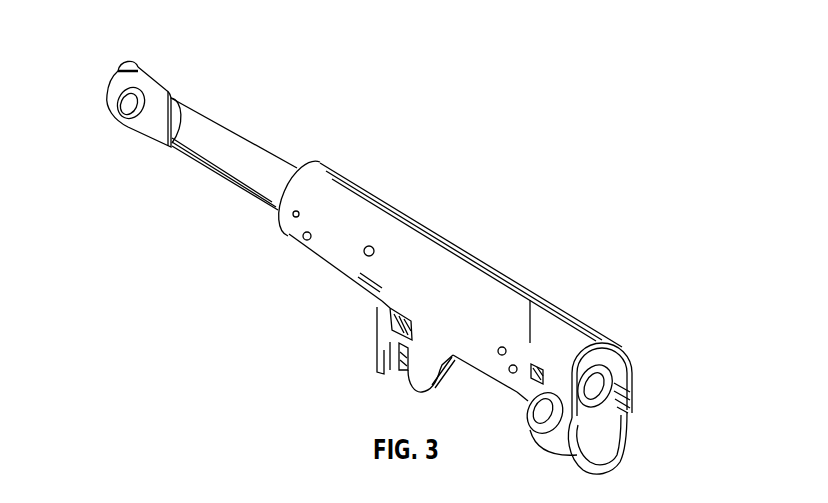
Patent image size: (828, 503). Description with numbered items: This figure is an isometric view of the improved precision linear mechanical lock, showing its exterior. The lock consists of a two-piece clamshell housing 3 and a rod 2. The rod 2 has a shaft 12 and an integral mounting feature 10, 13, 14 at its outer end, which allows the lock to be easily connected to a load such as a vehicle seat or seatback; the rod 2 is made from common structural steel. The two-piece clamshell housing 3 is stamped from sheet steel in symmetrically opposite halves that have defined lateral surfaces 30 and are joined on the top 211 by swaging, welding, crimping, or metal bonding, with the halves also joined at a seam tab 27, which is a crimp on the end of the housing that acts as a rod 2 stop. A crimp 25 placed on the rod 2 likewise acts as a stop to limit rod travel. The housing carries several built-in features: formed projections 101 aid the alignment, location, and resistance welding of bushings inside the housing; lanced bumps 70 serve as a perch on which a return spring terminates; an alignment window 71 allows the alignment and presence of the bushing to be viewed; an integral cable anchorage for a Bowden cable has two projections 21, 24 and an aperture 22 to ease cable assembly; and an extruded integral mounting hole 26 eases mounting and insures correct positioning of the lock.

The rod 2 is at (118, 73).
The integral mounting feature 10 is at (160, 82).
The shaft 12 is at (231, 136).
The integral mounting feature 13 is at (150, 130).
The integral mounting feature 14 is at (127, 108).
The top 211 is at (330, 167).
The lateral surface 30 is at (423, 298).
The lanced bump 70 is at (372, 246).
The formed projection 101 is at (305, 240).
The aperture 22 is at (382, 303).
The projection 21 is at (377, 372).
The projection 24 is at (438, 391).
The alignment window 71 is at (540, 365).
The two-piece clamshell housing 3 is at (627, 348).
The crimp 25 is at (608, 382).
The extruded integral mounting hole 26 is at (549, 428).
The crimp 27 is at (614, 445).